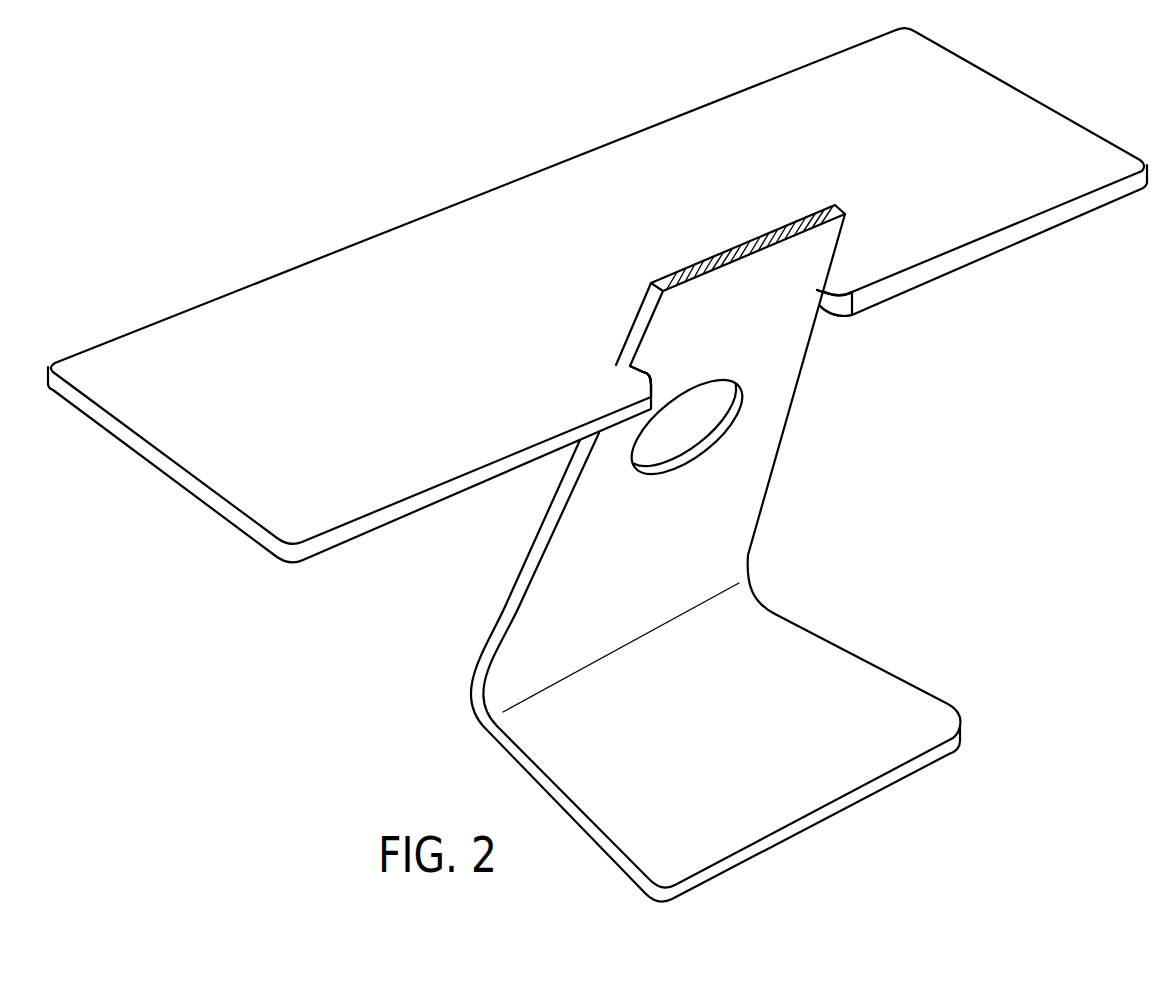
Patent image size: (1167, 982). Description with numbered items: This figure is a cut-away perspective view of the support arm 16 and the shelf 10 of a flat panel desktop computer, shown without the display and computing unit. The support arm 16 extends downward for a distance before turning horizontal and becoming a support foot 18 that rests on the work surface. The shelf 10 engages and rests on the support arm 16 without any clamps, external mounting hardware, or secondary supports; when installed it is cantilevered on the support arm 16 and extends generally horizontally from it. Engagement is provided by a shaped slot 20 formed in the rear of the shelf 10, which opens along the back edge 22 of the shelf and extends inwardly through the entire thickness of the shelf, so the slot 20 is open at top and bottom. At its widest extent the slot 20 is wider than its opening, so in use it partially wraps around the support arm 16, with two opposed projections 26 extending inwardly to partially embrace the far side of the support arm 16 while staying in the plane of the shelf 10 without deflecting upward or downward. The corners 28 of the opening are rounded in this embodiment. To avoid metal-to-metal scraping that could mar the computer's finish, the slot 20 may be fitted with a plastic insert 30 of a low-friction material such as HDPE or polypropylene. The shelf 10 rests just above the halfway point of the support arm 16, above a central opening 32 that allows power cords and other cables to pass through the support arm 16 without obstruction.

The shelf 10 is at (463, 197).
The support arm 16 is at (521, 578).
The support foot 18 is at (890, 692).
The shaped slot 20 is at (626, 371).
The back edge 22 is at (930, 275).
The opposed projections 26 is at (643, 372).
The corners 28 is at (652, 397).
The plastic insert 30 is at (818, 289).
The central opening 32 is at (669, 446).